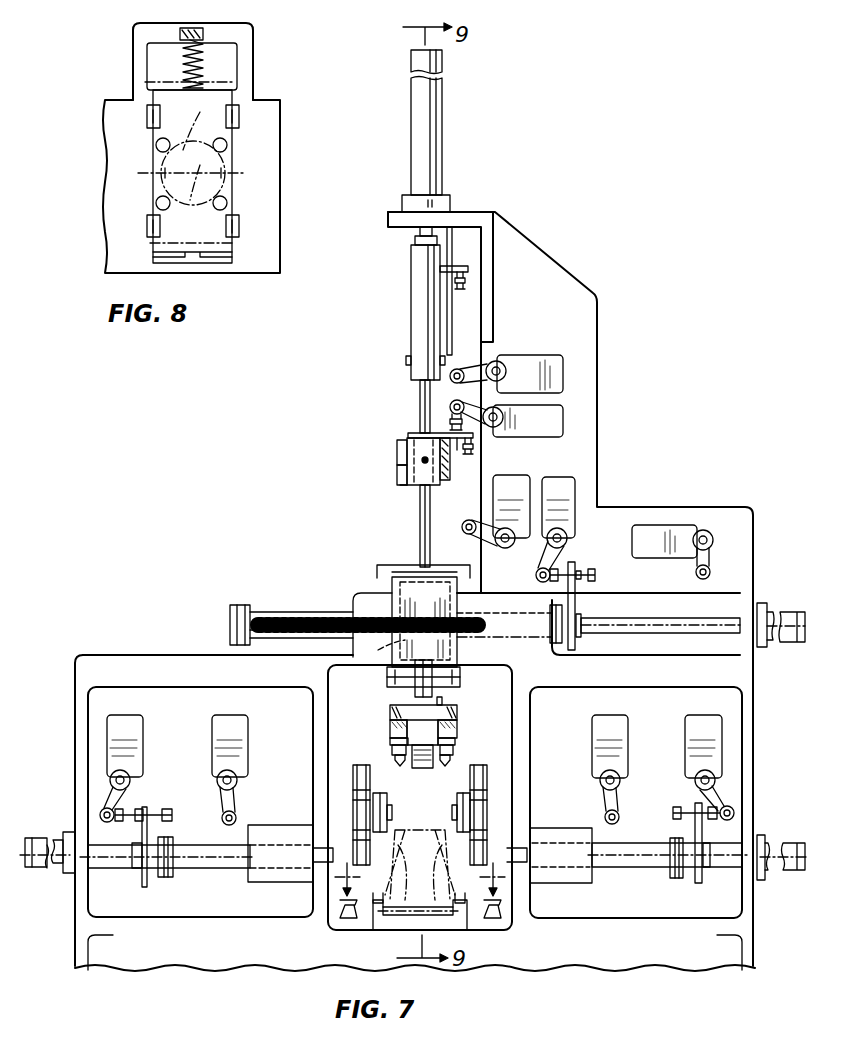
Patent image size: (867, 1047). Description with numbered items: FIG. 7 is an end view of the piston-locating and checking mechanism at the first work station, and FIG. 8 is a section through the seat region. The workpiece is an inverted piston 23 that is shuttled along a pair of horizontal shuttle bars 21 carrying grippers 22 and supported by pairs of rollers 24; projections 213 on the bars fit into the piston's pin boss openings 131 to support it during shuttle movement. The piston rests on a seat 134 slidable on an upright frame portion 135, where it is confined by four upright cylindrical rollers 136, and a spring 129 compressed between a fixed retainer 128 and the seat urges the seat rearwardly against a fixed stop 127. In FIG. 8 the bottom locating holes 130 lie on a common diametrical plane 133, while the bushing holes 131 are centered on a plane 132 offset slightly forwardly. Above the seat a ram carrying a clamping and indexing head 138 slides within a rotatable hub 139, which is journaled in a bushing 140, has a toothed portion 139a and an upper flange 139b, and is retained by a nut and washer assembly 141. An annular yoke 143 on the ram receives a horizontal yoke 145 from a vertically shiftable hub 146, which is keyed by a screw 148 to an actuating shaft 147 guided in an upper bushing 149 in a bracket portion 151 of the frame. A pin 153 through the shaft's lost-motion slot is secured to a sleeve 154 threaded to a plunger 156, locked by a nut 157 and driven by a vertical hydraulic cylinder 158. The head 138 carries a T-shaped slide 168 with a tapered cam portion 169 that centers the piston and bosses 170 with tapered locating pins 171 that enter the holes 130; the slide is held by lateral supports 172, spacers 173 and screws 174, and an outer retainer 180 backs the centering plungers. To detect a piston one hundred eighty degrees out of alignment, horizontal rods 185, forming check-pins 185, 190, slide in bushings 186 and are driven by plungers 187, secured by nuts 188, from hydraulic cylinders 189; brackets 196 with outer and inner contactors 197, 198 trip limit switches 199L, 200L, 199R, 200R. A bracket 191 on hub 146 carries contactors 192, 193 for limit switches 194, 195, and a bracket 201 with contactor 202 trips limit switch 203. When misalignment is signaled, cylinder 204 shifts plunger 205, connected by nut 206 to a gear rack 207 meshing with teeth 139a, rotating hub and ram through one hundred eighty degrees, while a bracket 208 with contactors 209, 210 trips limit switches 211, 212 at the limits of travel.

In FIG. 7, the shuttle bars 21 is at (372, 806).
In FIG. 7, the grippers 22 is at (457, 798).
In FIG. 8, the piston 23 is at (203, 124).
In FIG. 7, the piston 23 is at (428, 830).
In FIG. 7, the rollers 24 is at (352, 780).
In FIG. 8, the fixed stop 127 is at (195, 258).
In FIG. 8, the fixed retainer 128 is at (205, 34).
In FIG. 8, the spring 129 is at (184, 52).
In FIG. 8, the bottom locating holes 130 is at (168, 168).
In FIG. 7, the bottom locating holes 130 is at (423, 875).
In FIG. 7, the pin boss openings 131 is at (420, 890).
In FIG. 8, the plane 132 is at (180, 131).
In FIG. 8, the common diametrical plane 133 is at (206, 196).
In FIG. 8, the seat 134 is at (225, 96).
In FIG. 7, the seat 134 is at (400, 916).
In FIG. 8, the upright frame portion 135 is at (115, 106).
In FIG. 7, the upright frame portion 135 is at (598, 388).
In FIG. 8, the upright cylindrical rollers 136 is at (157, 145).
In FIG. 7, the upright cylindrical rollers 136 is at (380, 898).
In FIG. 7, the clamping and indexing head 138 is at (458, 726).
In FIG. 7, the rotatable hub 139 is at (546, 625).
In FIG. 7, the toothed portion 139a is at (378, 654).
In FIG. 7, the upper flange 139b is at (383, 570).
In FIG. 7, the bushing 140 is at (378, 582).
In FIG. 7, the nut and washer assembly 141 is at (392, 684).
In FIG. 7, the annular yoke 143 is at (398, 474).
In FIG. 7, the horizontal yoke 145 is at (398, 450).
In FIG. 7, the vertically shiftable hub 146 is at (404, 482).
In FIG. 7, the actuating shaft 147 is at (420, 394).
In FIG. 7, the screw 148 is at (425, 458).
In FIG. 7, the upper bushing 149 is at (440, 576).
In FIG. 7, the bracket portion 151 is at (402, 598).
In FIG. 7, the vertically shiftable pin 153 is at (406, 361).
In FIG. 7, the sleeve 154 is at (413, 270).
In FIG. 7, the plunger 156 is at (430, 228).
In FIG. 7, the nut 157 is at (414, 235).
In FIG. 7, the vertical hydraulic cylinder 158 is at (418, 133).
In FIG. 7, the T-shaped slide 168 is at (425, 740).
In FIG. 7, the tapered cam portion 169 is at (425, 760).
In FIG. 7, the bosses 170 is at (392, 748).
In FIG. 7, the locating pin 171 is at (450, 760).
In FIG. 7, the lateral supports 172 is at (392, 740).
In FIG. 7, the spacers 173 is at (393, 728).
In FIG. 7, the screws 174 is at (395, 712).
In FIG. 7, the outer retainer 180 is at (458, 716).
In FIG. 7, the horizontal rods 185 is at (215, 860).
In FIG. 7, the bushings 186 is at (255, 884).
In FIG. 7, the hydraulically actuated plunger 187 is at (100, 860).
In FIG. 7, the nut 188 is at (133, 870).
In FIG. 7, the hydraulic cylinder 189 is at (58, 870).
In FIG. 7, the horizontal check-pin 190 is at (330, 855).
In FIG. 7, the bracket 191 is at (457, 442).
In FIG. 7, the upper limit switch contactor 192 is at (452, 418).
In FIG. 7, the lower limit switch contactor 193 is at (476, 452).
In FIG. 7, the upper limit switch 194 is at (565, 420).
In FIG. 7, the lower limit switch 195 is at (508, 482).
In FIG. 7, the bracket 196 is at (142, 830).
In FIG. 7, the outer limit switch contactor 197 is at (128, 810).
In FIG. 7, the inner limit switch contactor 198 is at (162, 808).
In FIG. 7, the outer limit switch 199L is at (125, 726).
In FIG. 7, the inner limit switch 200L is at (228, 726).
In FIG. 7, the outer limit switch 199R is at (693, 728).
In FIG. 7, the inner limit switch 200R is at (605, 728).
In FIG. 7, the bracket 201 is at (470, 268).
In FIG. 7, the limit switch contactor 202 is at (468, 283).
In FIG. 7, the limit switch 203 is at (530, 358).
In FIG. 7, the cylinder 204 is at (785, 614).
In FIG. 7, the hydraulically actuated plunger 205 is at (645, 620).
In FIG. 7, the nut 206 is at (582, 616).
In FIG. 7, the gear rack 207 is at (275, 612).
In FIG. 7, the bracket 208 is at (576, 596).
In FIG. 7, the contactor 209 is at (592, 572).
In FIG. 7, the contactor 210 is at (560, 570).
In FIG. 7, the limit switch 211 is at (650, 536).
In FIG. 7, the limit switch 212 is at (563, 482).
In FIG. 7, the projection 213 is at (387, 812).